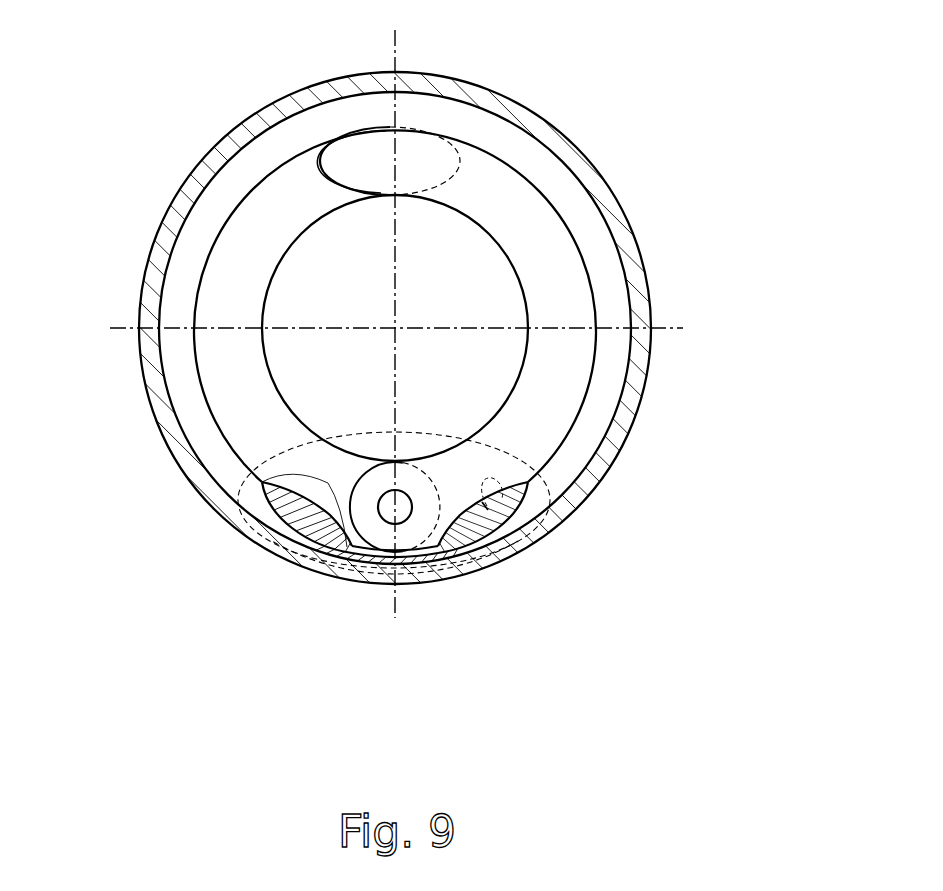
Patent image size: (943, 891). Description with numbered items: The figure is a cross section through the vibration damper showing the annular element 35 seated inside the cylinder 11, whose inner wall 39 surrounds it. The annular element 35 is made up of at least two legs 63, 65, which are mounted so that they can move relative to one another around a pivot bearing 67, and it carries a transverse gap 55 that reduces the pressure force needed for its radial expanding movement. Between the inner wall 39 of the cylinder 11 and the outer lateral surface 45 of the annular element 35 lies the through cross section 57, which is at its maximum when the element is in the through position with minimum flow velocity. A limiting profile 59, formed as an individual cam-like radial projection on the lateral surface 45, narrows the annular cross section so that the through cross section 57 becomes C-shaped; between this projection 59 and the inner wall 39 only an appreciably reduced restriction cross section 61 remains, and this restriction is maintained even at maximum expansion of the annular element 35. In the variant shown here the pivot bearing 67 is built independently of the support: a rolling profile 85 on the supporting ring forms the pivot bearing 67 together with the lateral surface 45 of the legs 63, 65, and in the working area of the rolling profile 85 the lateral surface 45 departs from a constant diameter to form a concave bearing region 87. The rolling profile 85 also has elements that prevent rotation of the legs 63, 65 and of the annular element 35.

The cylinder 11 is at (220, 503).
The annular element 35 is at (227, 457).
The inner wall 39 is at (618, 378).
The outer lateral surface 45 is at (576, 419).
The transverse gap 55 is at (328, 158).
The through cross section 57 is at (570, 447).
The limiting profile 59 is at (470, 548).
The restriction cross section 61 is at (365, 580).
The first leg 63 is at (228, 280).
The second leg 65 is at (560, 275).
The pivot bearing 67 is at (413, 430).
The rolling profile 85 is at (520, 498).
The concave bearing region 87 is at (328, 480).